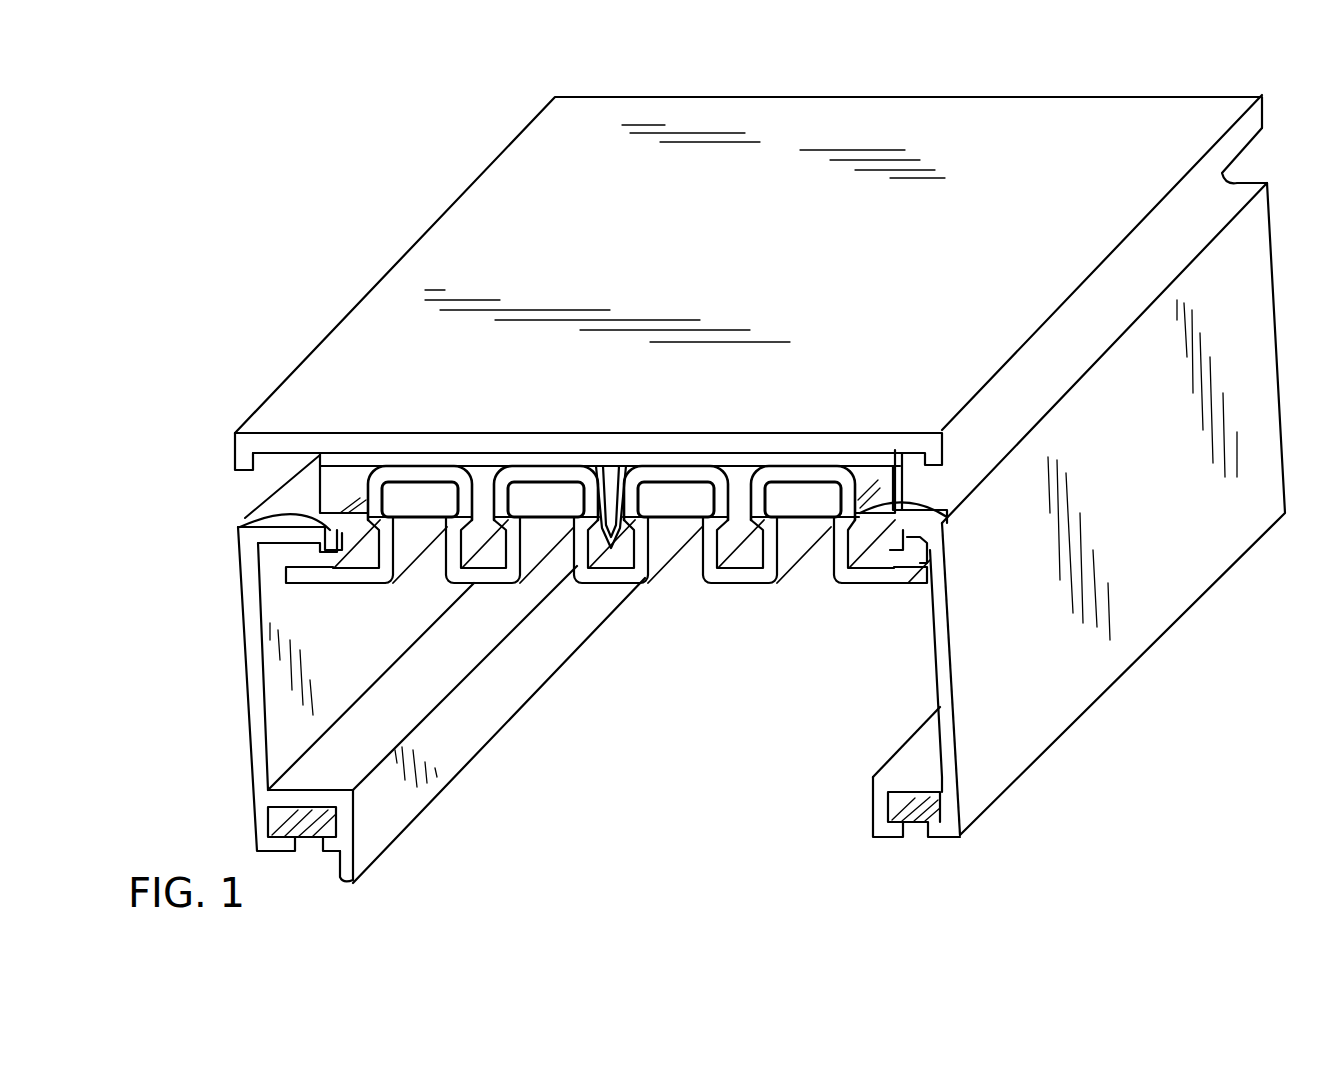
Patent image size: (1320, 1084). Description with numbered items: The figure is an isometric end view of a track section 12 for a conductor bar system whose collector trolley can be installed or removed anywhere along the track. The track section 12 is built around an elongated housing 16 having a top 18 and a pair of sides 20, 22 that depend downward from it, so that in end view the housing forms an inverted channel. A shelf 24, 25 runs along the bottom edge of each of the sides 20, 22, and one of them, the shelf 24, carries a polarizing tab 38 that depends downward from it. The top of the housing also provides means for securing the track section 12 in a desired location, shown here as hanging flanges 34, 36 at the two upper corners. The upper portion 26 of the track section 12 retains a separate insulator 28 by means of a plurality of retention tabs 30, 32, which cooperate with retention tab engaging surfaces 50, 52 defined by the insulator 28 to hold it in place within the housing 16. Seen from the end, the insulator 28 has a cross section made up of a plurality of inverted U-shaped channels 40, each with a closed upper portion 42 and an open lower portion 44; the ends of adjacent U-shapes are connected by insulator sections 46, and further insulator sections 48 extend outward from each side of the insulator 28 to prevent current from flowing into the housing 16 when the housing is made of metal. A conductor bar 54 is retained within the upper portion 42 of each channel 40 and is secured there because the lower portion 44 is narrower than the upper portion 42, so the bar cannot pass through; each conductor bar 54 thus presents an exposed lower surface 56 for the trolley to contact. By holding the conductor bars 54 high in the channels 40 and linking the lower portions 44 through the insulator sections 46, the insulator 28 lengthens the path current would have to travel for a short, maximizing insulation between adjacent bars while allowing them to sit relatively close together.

The track section 12 is at (348, 301).
The elongated housing 16 is at (663, 203).
The top 18 is at (730, 296).
The side 20 is at (263, 717).
The side 22 is at (1171, 525).
The shelf 24 is at (375, 743).
The shelf 25 is at (908, 757).
The upper portion 26 is at (240, 492).
The insulator 28 is at (305, 573).
The retention tab 30 is at (332, 530).
The retention tab 32 is at (610, 560).
The hanging flange 34 is at (240, 428).
The hanging flange 36 is at (1028, 352).
The polarizing tab 38 is at (348, 885).
The inverted U-shaped channel 40 is at (631, 551).
The closed upper portion 42 is at (490, 493).
The open lower portion 44 is at (440, 555).
The insulator section 46 is at (442, 575).
The insulator section 48 is at (338, 580).
The retention tab engaging surface 50 is at (362, 460).
The retention tab engaging surface 52 is at (617, 493).
The conductor bar 54 is at (415, 490).
The exposed lower surface 56 is at (402, 577).